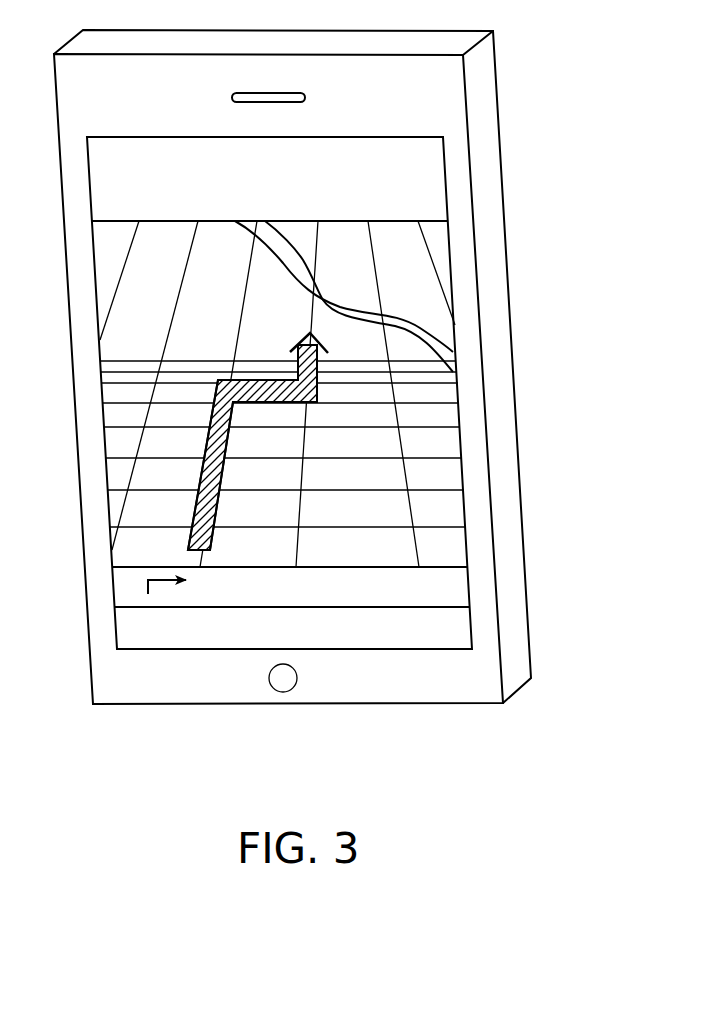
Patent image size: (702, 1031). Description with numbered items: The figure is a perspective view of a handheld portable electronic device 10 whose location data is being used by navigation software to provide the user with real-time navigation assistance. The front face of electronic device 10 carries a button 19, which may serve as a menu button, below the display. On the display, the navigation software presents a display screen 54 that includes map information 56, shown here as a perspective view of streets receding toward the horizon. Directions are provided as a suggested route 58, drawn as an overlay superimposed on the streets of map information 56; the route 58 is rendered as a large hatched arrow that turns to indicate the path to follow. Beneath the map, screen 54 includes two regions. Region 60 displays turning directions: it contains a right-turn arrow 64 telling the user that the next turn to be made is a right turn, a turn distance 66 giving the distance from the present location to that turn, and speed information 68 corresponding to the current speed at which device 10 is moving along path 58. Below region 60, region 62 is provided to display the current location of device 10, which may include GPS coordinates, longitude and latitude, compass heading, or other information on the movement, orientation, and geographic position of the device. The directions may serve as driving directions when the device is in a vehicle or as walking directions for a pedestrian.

The electronic device 10 is at (556, 70).
The button 19 is at (290, 690).
The display screen 54 is at (422, 292).
The map information 56 is at (400, 415).
The suggested route 58 is at (228, 466).
The region 60 is at (472, 577).
The region 62 is at (462, 628).
The right-turn arrow 64 is at (128, 583).
The turn distance 66 is at (190, 595).
The speed information 68 is at (462, 592).